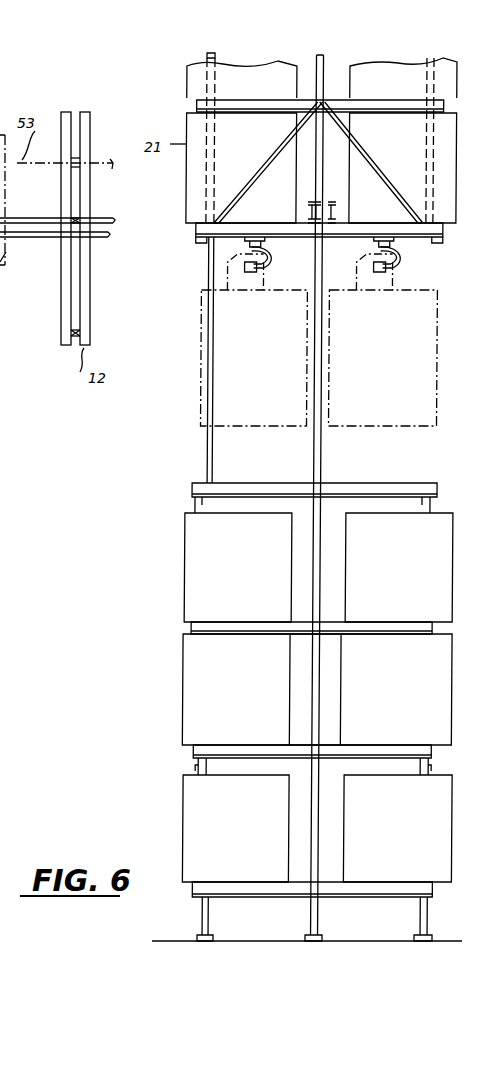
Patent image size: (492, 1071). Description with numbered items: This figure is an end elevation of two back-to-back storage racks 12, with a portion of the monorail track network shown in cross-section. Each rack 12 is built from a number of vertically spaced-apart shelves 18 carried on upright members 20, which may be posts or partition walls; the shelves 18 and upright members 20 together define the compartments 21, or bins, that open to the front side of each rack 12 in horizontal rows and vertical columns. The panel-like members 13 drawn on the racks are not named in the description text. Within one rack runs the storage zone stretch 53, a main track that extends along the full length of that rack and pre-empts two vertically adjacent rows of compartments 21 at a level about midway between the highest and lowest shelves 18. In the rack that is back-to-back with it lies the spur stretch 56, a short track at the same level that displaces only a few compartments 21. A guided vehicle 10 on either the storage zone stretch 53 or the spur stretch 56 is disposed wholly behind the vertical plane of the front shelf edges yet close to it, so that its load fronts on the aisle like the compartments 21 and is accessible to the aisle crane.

The guided vehicle 10 is at (262, 429).
The rack 12 is at (438, 486).
The side panel 13 is at (185, 578).
The shelf 18 is at (203, 622).
The upright member 20 is at (197, 770).
The compartment 21 is at (321, 168).
The storage zone stretch 53 is at (268, 256).
The spur stretch 56 is at (398, 260).